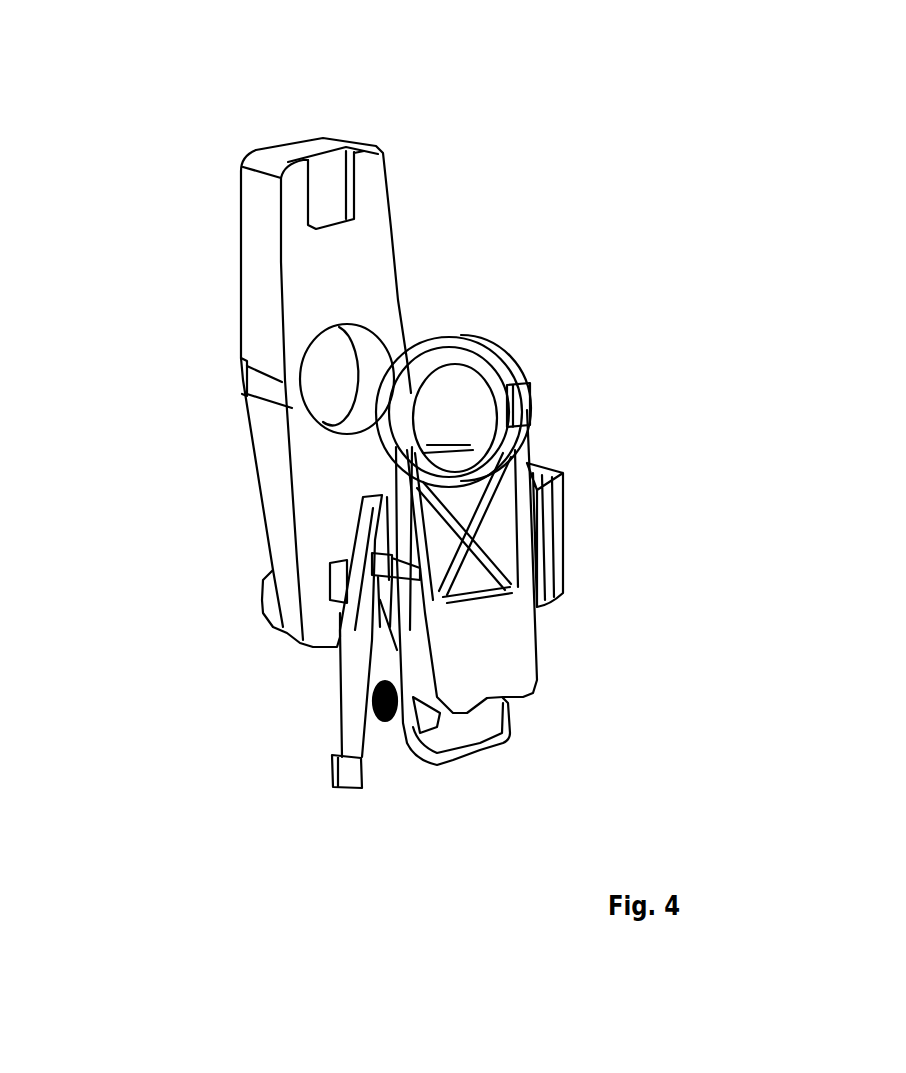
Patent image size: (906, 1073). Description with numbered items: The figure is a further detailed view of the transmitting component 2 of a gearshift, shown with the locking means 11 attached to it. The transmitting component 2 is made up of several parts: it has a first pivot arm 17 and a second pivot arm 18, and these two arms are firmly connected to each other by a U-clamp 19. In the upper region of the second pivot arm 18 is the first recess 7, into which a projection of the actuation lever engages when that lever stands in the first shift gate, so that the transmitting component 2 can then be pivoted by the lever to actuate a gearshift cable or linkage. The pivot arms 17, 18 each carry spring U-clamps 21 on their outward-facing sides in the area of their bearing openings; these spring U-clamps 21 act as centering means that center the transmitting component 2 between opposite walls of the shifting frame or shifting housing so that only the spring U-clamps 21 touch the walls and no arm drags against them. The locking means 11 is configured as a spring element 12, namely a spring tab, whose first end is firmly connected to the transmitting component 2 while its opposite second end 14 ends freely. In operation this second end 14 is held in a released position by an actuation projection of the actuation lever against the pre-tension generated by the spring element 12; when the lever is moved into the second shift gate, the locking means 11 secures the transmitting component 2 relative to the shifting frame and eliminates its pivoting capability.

The transmitting component 2 is at (407, 466).
The first recess 7 is at (323, 175).
The locking means 11 is at (285, 695).
The spring element 12 is at (360, 697).
The second end 14 is at (347, 777).
The first pivot arm 17 is at (560, 567).
The second pivot arm 18 is at (239, 347).
The U-clamp 19 is at (560, 560).
The spring U-clamps 21 is at (353, 353).